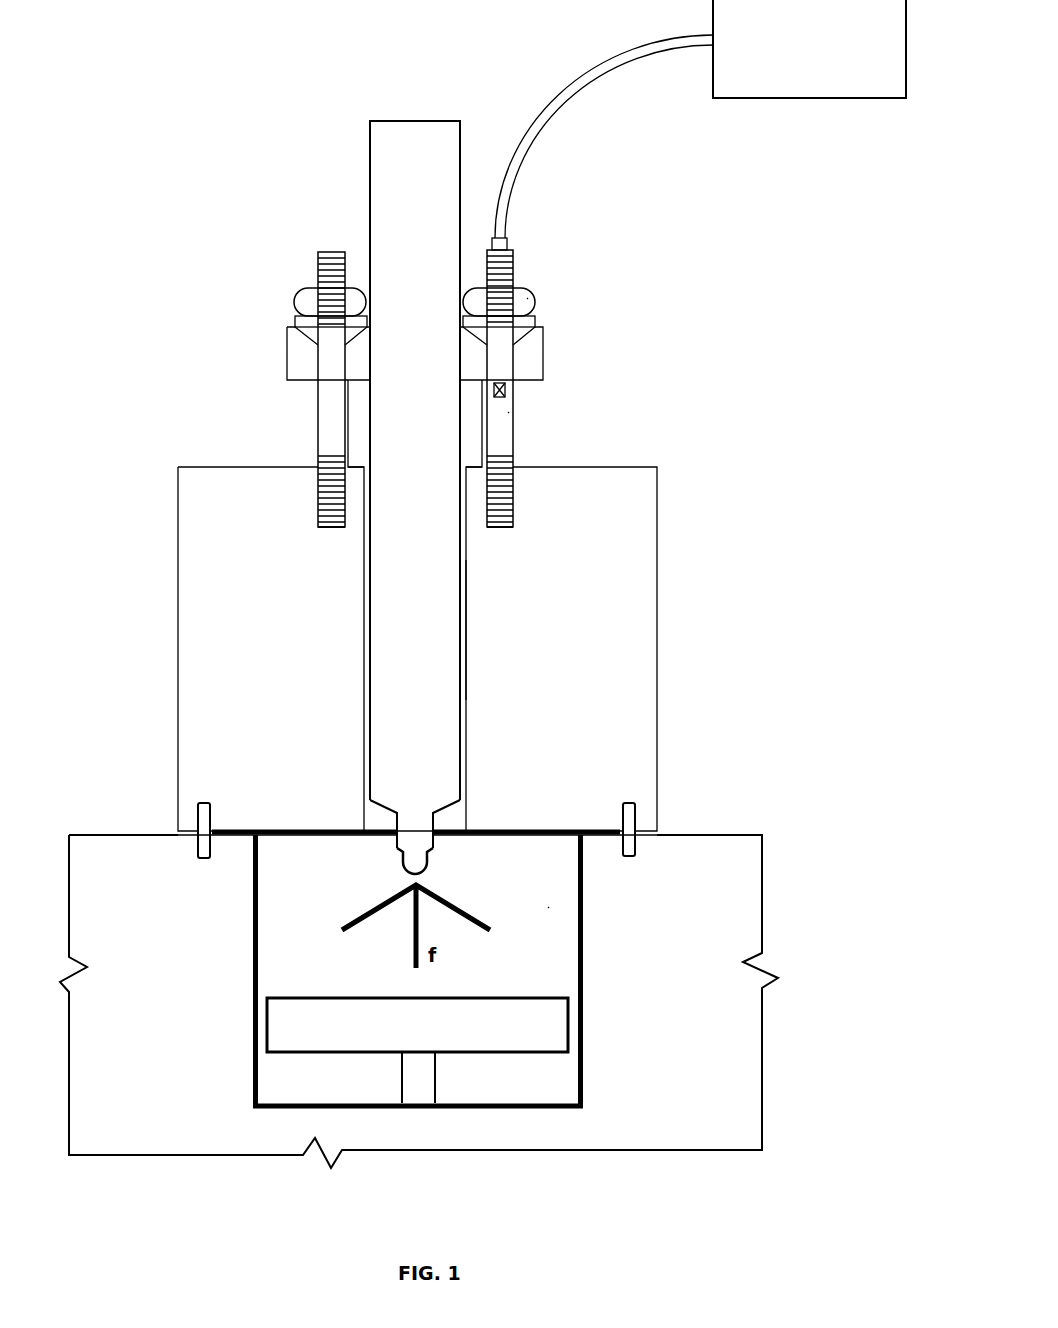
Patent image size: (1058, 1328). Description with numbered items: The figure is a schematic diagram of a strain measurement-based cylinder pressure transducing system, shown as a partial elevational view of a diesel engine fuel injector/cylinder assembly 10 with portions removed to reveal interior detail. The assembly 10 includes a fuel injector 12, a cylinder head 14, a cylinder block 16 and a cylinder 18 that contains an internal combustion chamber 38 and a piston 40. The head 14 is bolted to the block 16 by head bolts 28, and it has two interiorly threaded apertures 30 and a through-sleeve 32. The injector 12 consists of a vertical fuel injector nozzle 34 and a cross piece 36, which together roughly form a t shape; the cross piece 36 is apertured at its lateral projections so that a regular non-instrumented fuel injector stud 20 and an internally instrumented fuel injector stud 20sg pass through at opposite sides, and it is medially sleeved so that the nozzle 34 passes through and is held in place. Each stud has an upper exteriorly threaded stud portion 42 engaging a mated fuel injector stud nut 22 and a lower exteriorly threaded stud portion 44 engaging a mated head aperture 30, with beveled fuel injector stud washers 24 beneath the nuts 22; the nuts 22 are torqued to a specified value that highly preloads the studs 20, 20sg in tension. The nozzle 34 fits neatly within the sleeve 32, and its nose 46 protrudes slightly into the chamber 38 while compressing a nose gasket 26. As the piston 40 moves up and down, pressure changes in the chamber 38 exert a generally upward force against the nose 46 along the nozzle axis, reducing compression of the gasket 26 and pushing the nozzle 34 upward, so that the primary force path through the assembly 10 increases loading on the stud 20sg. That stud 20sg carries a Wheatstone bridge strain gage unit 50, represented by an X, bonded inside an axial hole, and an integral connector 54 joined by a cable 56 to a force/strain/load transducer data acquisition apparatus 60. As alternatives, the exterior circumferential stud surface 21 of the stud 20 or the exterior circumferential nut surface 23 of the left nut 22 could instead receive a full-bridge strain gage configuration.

The diesel engine fuel injector/cylinder assembly 10 is at (247, 240).
The fuel injector 12 is at (369, 197).
The cylinder head 14 is at (665, 615).
The cylinder block 16 is at (767, 893).
The cylinder 18 is at (582, 968).
The regular fuel injector stud 20 is at (312, 422).
The internally instrumented fuel injector stud 20sg is at (513, 444).
The exterior circumferential stud surface 21 is at (508, 412).
The fuel injector stud nut 22 is at (296, 293).
The exterior circumferential nut surface 23 is at (527, 298).
The beveled fuel injector stud washer 24 is at (290, 320).
The nose gasket 26 is at (468, 815).
The head bolt 28 is at (195, 818).
The interiorly threaded aperture 30 is at (313, 502).
The through-sleeve 32 is at (473, 652).
The fuel injector nozzle 34 is at (447, 705).
The cross piece 36 is at (296, 356).
The internal combustion chamber 38 is at (548, 907).
The piston 40 is at (548, 1028).
The upper exteriorly threaded stud portion 42 is at (322, 256).
The lower exteriorly threaded stud portion 44 is at (322, 526).
The nose 46 is at (452, 847).
The Wheatstone bridge strain gage unit 50 is at (510, 387).
The connector 54 is at (508, 237).
The cable 56 is at (557, 97).
The force/strain/load transducer data acquisition apparatus 60 is at (908, 17).